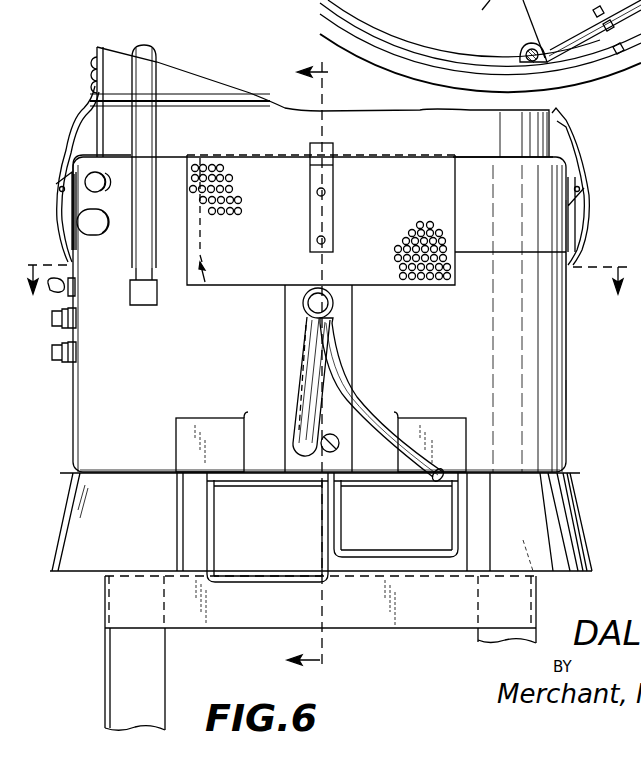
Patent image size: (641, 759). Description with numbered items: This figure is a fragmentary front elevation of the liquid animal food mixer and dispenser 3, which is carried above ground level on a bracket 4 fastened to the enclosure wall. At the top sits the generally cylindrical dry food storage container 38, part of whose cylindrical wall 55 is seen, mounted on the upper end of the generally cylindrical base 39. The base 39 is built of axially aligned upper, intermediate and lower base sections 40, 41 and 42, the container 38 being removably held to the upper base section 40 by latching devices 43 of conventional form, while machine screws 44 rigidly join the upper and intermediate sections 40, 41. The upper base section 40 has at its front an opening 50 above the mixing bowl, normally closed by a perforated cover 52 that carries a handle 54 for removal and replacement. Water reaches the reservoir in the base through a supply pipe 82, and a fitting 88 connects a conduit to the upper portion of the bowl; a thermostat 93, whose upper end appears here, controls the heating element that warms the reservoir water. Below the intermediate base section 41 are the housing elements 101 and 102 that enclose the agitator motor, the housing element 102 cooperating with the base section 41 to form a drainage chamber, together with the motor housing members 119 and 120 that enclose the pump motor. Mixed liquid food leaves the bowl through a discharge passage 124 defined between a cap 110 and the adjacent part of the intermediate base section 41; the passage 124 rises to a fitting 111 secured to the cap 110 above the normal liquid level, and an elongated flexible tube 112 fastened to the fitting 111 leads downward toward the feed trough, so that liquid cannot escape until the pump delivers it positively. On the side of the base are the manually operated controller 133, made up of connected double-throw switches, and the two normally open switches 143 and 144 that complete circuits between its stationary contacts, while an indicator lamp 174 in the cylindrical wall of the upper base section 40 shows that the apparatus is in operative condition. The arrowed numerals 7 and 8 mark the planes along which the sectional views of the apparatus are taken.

The liquid animal food mixer and dispenser 3 is at (578, 391).
The bracket 4 is at (110, 683).
The section line 7- 7 is at (324, 265).
The barrier wall 8 is at (318, 369).
The dry food storage container 38 is at (108, 46).
The base 39 is at (568, 331).
The upper base section 40 is at (513, 223).
The intermediate base section 41 is at (500, 348).
The lower base section 42 is at (537, 533).
The latching devices 43 is at (66, 137).
The machine screws 44 is at (529, 46).
The opening 50 is at (203, 284).
The perforated cover 52 is at (258, 276).
The handle 54 is at (335, 145).
The cylindrical wall 55 is at (97, 50).
The supply pipe 82 is at (157, 47).
The fitting 88 is at (378, 0).
The thermostat 93 is at (505, 29).
The housing element 101 is at (416, 537).
The housing element 102 is at (376, 482).
The cap 110 is at (297, 432).
The fitting 111 is at (312, 303).
The elongated flexible tube 112 is at (366, 408).
The motor housing member 119 is at (268, 544).
The motor housing member 120 is at (262, 482).
The discharge passage 124 is at (300, 380).
The manually operated controller 133 is at (52, 289).
The normally open switch 143 is at (60, 318).
The second normally open switch 144 is at (52, 352).
The indicator lamp 174 is at (101, 180).